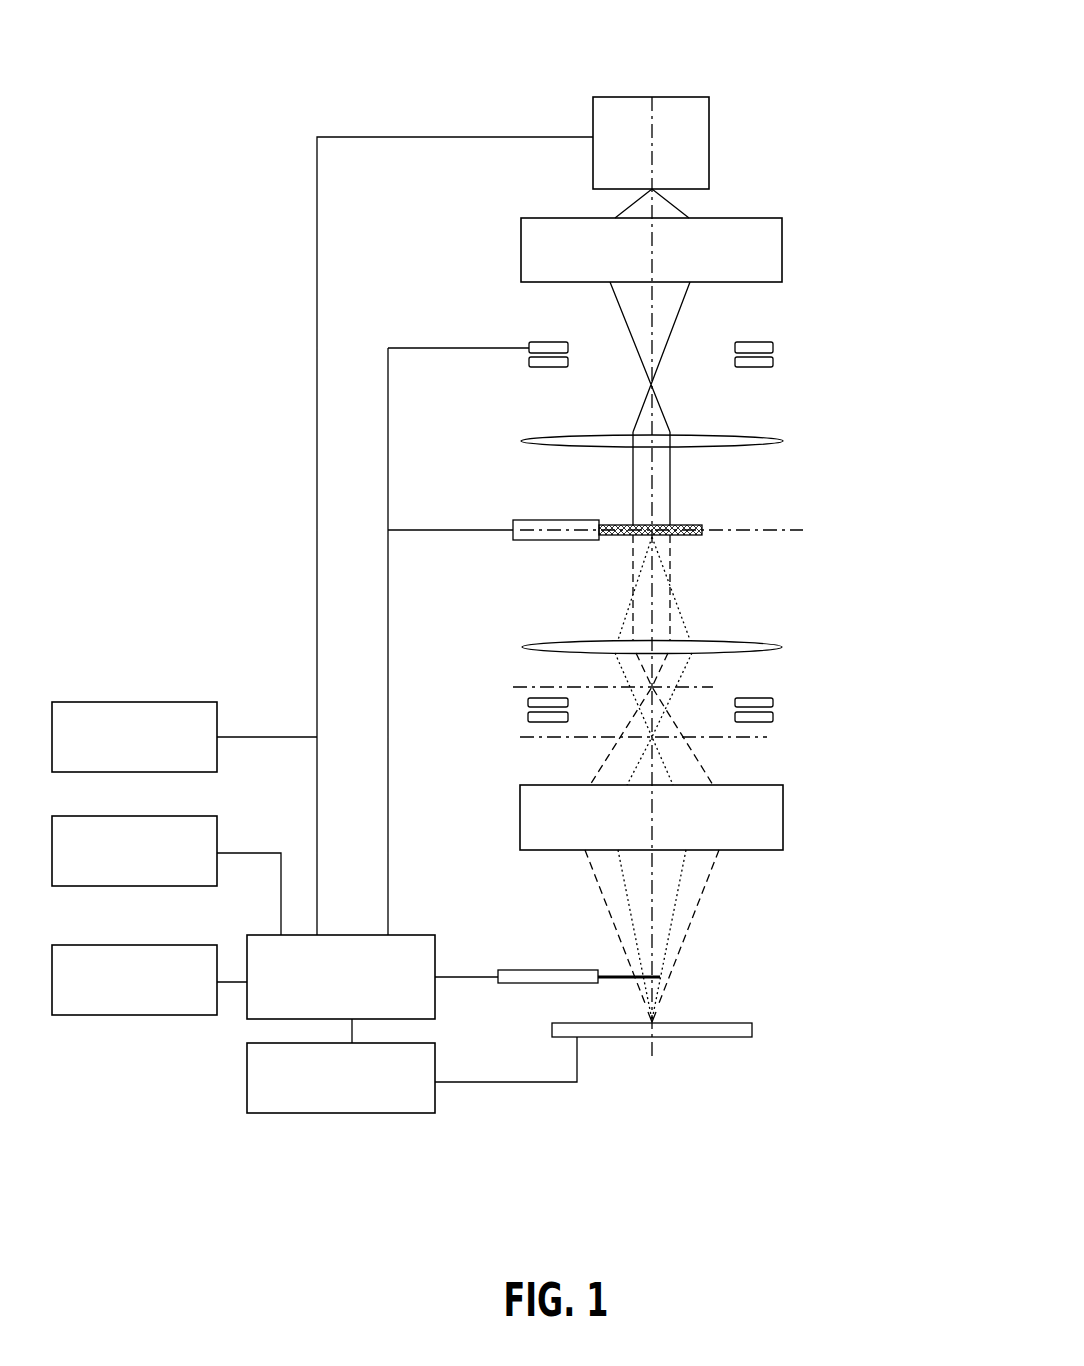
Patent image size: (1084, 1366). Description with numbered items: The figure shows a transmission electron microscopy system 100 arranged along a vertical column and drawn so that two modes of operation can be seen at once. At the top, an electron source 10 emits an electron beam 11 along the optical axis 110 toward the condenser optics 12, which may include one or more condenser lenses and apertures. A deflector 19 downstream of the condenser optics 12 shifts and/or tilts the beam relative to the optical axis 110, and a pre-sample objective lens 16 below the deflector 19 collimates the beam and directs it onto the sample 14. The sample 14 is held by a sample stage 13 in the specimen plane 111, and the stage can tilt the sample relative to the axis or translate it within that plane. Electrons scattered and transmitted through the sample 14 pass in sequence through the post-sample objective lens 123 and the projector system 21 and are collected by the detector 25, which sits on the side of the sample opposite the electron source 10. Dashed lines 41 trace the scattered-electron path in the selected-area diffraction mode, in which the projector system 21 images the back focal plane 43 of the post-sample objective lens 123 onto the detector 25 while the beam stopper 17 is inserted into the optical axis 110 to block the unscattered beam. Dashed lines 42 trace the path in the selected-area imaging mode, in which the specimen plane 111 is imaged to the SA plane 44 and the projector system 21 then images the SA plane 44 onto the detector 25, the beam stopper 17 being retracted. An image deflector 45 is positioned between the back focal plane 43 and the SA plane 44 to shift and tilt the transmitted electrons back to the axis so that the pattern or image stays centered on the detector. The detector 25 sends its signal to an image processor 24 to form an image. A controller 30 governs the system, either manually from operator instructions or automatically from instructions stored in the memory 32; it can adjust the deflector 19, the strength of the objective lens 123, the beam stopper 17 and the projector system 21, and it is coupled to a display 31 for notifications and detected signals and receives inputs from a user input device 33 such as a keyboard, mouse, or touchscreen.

The transmission electron microscopy system 100 is at (852, 43).
The electron source 10 is at (709, 97).
The optical axis 110 is at (655, 166).
The electron beam 11 is at (666, 212).
The condenser optics 12 is at (783, 248).
The deflector 19 is at (770, 342).
The pre-sample objective lens 16 is at (543, 433).
The sample stage 13 is at (550, 522).
The sample 14 is at (700, 525).
The specimen plane 111 is at (793, 525).
The dashed lines 41 is at (671, 567).
The dashed lines 42 is at (682, 612).
The post-sample objective lens 123 is at (747, 642).
The back focal plane 43 is at (716, 688).
The image deflector 45 is at (773, 698).
The SA plane 44 is at (773, 737).
The projector system 21 is at (783, 805).
The beam stopper 17 is at (625, 972).
The detector 25 is at (750, 1023).
The memory 32 is at (183, 702).
The display 31 is at (183, 816).
The user input device 33 is at (183, 945).
The controller 30 is at (407, 935).
The image processor 24 is at (277, 1113).